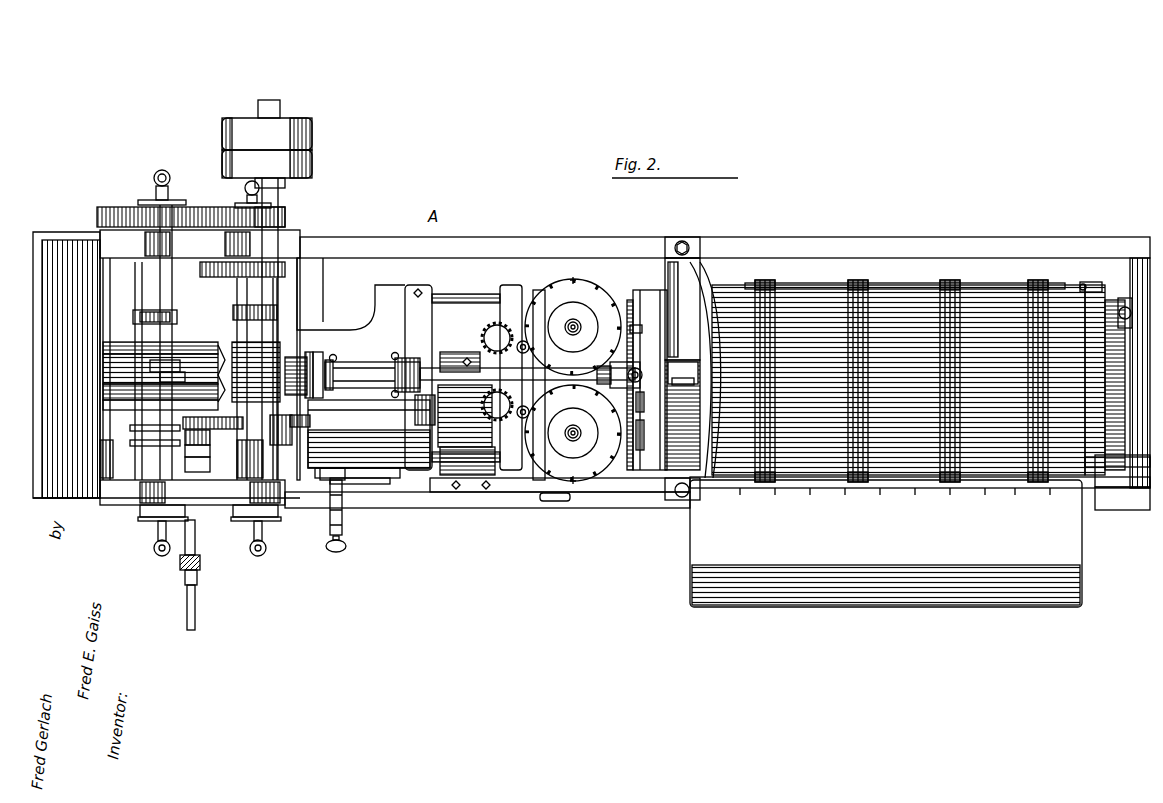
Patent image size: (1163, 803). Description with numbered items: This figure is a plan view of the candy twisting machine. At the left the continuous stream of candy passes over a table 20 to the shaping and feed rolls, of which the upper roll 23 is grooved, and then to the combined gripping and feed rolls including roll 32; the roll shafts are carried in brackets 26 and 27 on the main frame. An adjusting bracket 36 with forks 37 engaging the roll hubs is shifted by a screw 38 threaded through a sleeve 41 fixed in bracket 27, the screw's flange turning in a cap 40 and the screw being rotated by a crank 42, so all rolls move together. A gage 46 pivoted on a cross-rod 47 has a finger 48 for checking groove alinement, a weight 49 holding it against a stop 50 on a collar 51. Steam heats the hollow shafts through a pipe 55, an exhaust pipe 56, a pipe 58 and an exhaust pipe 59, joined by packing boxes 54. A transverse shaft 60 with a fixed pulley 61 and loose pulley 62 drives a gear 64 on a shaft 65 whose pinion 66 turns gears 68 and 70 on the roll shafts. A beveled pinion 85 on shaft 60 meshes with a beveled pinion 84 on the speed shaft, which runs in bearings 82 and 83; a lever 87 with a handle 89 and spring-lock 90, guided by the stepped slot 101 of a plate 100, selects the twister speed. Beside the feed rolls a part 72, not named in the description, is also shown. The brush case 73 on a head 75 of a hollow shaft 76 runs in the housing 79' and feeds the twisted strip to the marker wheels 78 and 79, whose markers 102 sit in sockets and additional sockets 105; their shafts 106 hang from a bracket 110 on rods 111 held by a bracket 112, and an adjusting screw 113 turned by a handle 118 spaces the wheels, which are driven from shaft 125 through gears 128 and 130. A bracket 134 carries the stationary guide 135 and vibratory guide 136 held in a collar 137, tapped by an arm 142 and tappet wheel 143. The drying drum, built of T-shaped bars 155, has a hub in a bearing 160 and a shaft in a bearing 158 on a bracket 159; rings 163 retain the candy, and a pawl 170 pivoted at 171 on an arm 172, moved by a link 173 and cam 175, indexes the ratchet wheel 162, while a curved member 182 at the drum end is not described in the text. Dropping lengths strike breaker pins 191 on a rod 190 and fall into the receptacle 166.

The table 20 is at (591, 370).
The upper shaping and feed roll 23 is at (103, 410).
The bracket 26 is at (200, 244).
The bracket 27 is at (192, 493).
The combined gripping and feed roll 32 is at (292, 357).
The adjusting bracket 36 is at (240, 420).
The forks 37 is at (160, 440).
The screw 38 is at (204, 454).
The cap 40 is at (204, 439).
The sleeve 41 is at (204, 467).
The crank 42 is at (196, 600).
The gage 46 is at (103, 397).
The cross-rod 47 is at (172, 288).
The finger 48 is at (103, 372).
The weight 49 is at (186, 378).
The stop 50 is at (103, 352).
The collar 51 is at (168, 364).
The packing boxes 54 is at (140, 512).
The pipe 55 is at (170, 174).
The exhaust pipe 56 is at (153, 548).
The pipe 58 is at (245, 188).
The exhaust pipe 59 is at (262, 553).
The transverse shaft 60 is at (283, 197).
The fixed pulley 61 is at (312, 161).
The loose pulley 62 is at (312, 131).
The gear 64 is at (233, 306).
The shaft 65 is at (168, 310).
The pinion 66 is at (230, 220).
The gear 68 is at (105, 207).
The gear 70 is at (286, 223).
The collar 72 is at (312, 352).
The case 73 is at (322, 352).
The head 75 is at (372, 361).
The hollow shaft 76 is at (458, 352).
The indenting and advancing wheel 78 is at (574, 332).
The indenting and advancing wheel 79 is at (573, 423).
The housing and support 79' is at (495, 390).
The bearing 82 is at (425, 421).
The bearing 83 is at (369, 434).
The beveled pinion 84 is at (306, 421).
The beveled pinion 85 is at (290, 445).
The lever 87 is at (328, 481).
The handle 89 is at (342, 521).
The spring-lock 90 is at (342, 549).
The plate 100 is at (362, 472).
The stepped slot 101 is at (382, 484).
The markers 102 is at (575, 281).
The additional sockets 105 is at (612, 293).
The shafts 106 is at (573, 378).
The bracket 110 is at (514, 313).
The rods 111 is at (458, 295).
The bracket 112 is at (700, 255).
The adjusting screw 113 is at (535, 489).
The handle 118 is at (555, 501).
The shaft 125 is at (632, 472).
The gear 128 is at (488, 418).
The gear 130 is at (497, 333).
The supporting bracket 134 is at (652, 472).
The stationary guide 135 is at (598, 400).
The vibratory guide 136 is at (600, 385).
The collar 137 is at (645, 396).
The arm 142 is at (642, 333).
The tappet wheel 143 is at (648, 429).
The bars 155 is at (905, 300).
The bearing 158 is at (1125, 373).
The bracket 159 is at (1135, 468).
The bearing 160 is at (682, 415).
The ratchet wheel 162 is at (1090, 432).
The rings 163 is at (300, 258).
The receptacle 166 is at (886, 543).
The pawl 170 is at (1082, 284).
The pivot 171 is at (1078, 288).
The arm 172 is at (1105, 285).
The link 173 is at (1111, 385).
The cam 175 is at (1126, 302).
The curved arm 182 is at (704, 310).
The rod 190 is at (862, 488).
The breaker pins 191 is at (780, 490).